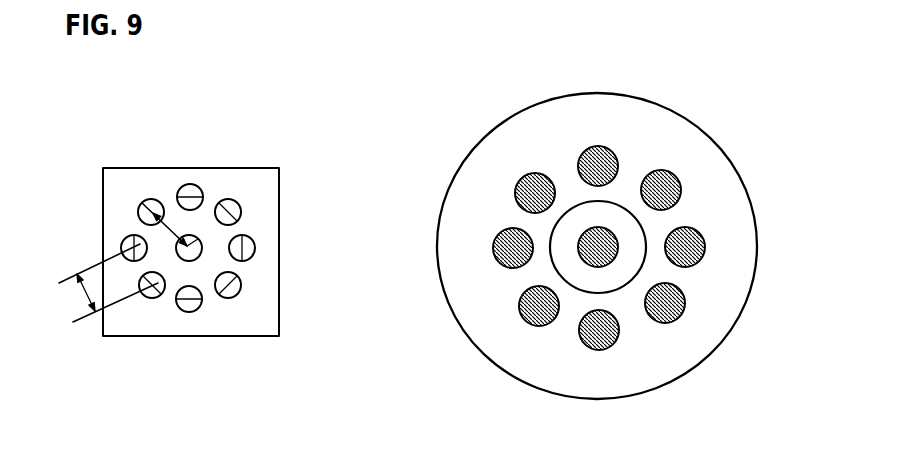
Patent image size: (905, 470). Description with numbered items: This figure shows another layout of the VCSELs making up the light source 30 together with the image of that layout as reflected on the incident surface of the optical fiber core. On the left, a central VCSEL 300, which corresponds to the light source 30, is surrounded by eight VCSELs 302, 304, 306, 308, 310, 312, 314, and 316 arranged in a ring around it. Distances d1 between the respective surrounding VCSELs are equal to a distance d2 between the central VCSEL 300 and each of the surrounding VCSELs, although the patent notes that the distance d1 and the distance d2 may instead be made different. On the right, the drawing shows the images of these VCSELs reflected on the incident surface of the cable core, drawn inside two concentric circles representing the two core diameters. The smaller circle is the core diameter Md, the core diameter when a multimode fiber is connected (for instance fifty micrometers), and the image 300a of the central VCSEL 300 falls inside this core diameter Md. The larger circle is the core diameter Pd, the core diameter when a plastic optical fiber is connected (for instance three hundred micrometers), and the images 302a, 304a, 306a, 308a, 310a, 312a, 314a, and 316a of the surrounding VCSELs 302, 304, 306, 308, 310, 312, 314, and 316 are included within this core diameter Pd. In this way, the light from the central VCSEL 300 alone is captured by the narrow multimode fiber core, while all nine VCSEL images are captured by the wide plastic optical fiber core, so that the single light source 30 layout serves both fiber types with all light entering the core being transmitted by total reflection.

The light source 30 is at (280, 167).
The central VCSEL 300 is at (201, 238).
The surrounding VCSEL 302 is at (255, 248).
The surrounding VCSEL 304 is at (240, 278).
The surrounding VCSEL 306 is at (192, 312).
The surrounding VCSEL 308 is at (148, 298).
The surrounding VCSEL 310 is at (121, 248).
The surrounding VCSEL 312 is at (139, 209).
The surrounding VCSEL 314 is at (189, 184).
The surrounding VCSEL 316 is at (229, 198).
The image of central VCSEL 300a is at (618, 238).
The image of surrounding VCSEL 302a is at (706, 247).
The image of surrounding VCSEL 304a is at (686, 312).
The image of surrounding VCSEL 306a is at (617, 344).
The image of surrounding VCSEL 308a is at (518, 310).
The image of surrounding VCSEL 310a is at (493, 248).
The image of surrounding VCSEL 312a is at (517, 195).
The image of surrounding VCSEL 314a is at (578, 162).
The image of surrounding VCSEL 316a is at (680, 177).
The core diameter for MMF Md is at (622, 207).
The core diameter for POF Pd is at (704, 134).
The distance between surrounding VCSELs d1 is at (105, 283).
The distance between central and surrounding VCSEL d2 is at (167, 224).